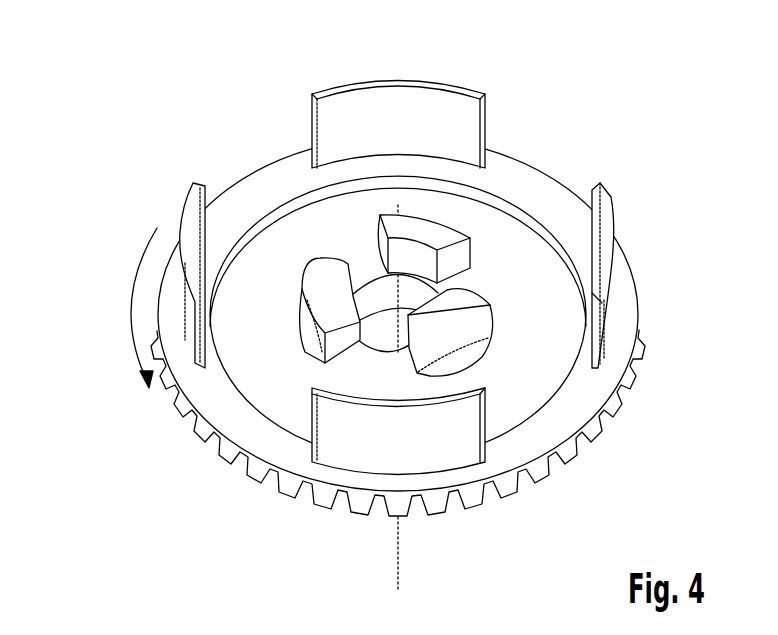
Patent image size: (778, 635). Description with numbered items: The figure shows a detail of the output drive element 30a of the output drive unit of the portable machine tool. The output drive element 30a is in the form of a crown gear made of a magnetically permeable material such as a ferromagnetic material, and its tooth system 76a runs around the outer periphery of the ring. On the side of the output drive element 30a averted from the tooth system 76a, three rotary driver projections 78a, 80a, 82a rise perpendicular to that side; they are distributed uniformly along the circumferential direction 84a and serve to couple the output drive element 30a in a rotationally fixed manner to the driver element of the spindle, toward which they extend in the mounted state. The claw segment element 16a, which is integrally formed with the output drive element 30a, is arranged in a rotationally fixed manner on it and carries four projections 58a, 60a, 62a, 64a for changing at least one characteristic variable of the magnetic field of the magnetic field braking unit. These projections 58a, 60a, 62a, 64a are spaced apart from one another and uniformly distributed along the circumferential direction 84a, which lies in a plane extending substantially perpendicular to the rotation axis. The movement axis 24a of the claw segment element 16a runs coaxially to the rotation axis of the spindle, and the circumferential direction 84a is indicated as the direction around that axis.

The claw segment element 16a is at (413, 341).
The movement axis 24a is at (398, 572).
The output drive element 30a is at (494, 210).
The projection 58a is at (605, 210).
The projection 60a is at (388, 97).
The projection 62a is at (188, 215).
The projection 64a is at (370, 453).
The tooth system 76a is at (238, 458).
The rotary driver projection 78a is at (458, 310).
The rotary driver projection 80a is at (440, 237).
The rotary driver projection 82a is at (330, 267).
The circumferential direction 84a is at (132, 303).